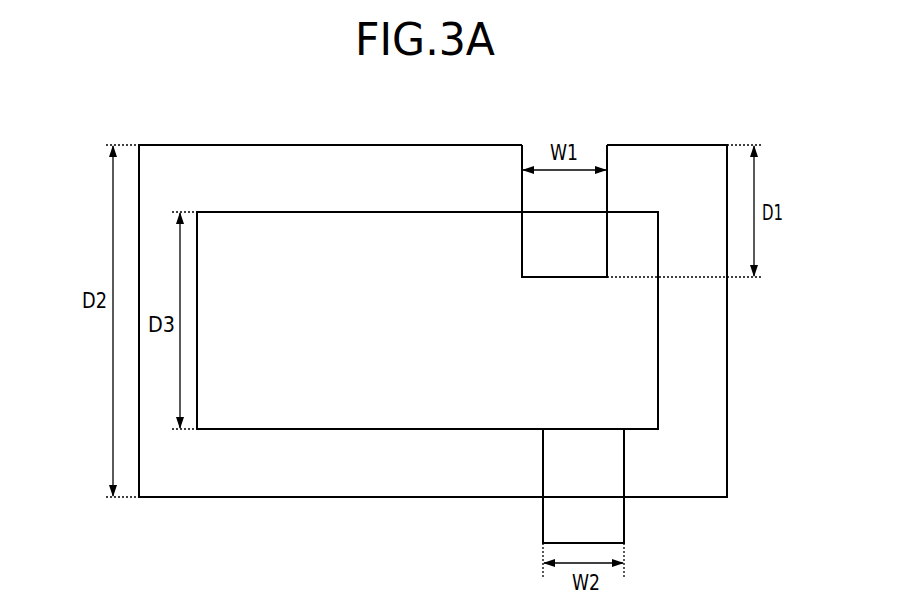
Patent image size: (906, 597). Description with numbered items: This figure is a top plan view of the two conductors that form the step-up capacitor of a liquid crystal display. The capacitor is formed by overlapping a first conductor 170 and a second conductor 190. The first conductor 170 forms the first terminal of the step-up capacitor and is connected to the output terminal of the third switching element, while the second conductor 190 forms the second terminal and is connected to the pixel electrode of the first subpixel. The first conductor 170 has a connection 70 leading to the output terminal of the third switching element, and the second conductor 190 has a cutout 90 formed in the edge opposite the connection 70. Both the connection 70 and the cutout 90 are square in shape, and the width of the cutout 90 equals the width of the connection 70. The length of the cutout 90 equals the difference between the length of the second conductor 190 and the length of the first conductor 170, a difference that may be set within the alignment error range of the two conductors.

The second conductor 190 is at (234, 145).
The cutout 90 is at (607, 145).
The first conductor 170 is at (252, 429).
The connection 70 is at (624, 462).